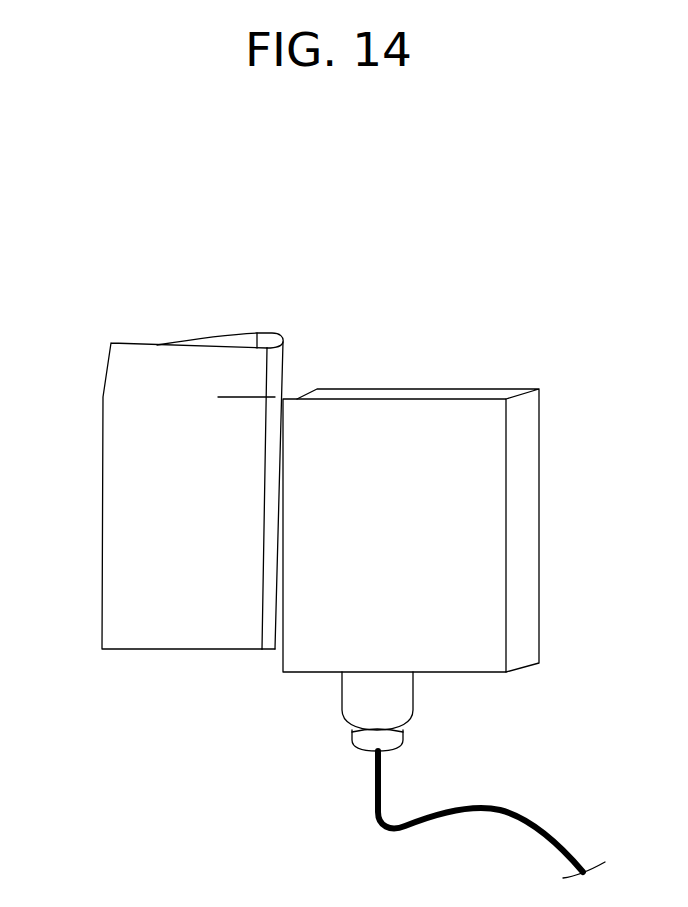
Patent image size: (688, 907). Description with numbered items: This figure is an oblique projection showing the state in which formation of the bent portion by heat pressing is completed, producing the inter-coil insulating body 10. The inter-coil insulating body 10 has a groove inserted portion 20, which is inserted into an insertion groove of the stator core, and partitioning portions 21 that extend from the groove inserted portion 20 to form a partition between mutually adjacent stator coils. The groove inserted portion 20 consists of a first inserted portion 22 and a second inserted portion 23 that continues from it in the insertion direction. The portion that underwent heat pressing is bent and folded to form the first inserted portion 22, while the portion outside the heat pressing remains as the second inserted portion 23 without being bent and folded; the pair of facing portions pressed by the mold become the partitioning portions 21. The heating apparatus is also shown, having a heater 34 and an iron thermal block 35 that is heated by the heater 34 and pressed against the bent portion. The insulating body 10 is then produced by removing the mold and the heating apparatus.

The inter-coil insulating body 10 is at (190, 516).
The groove inserted portion 20 is at (272, 650).
The partitioning portion 21 is at (145, 632).
The first inserted portion 22 is at (267, 603).
The second inserted portion 23 is at (272, 370).
The heater 34 is at (400, 700).
The thermal block 35 is at (526, 583).